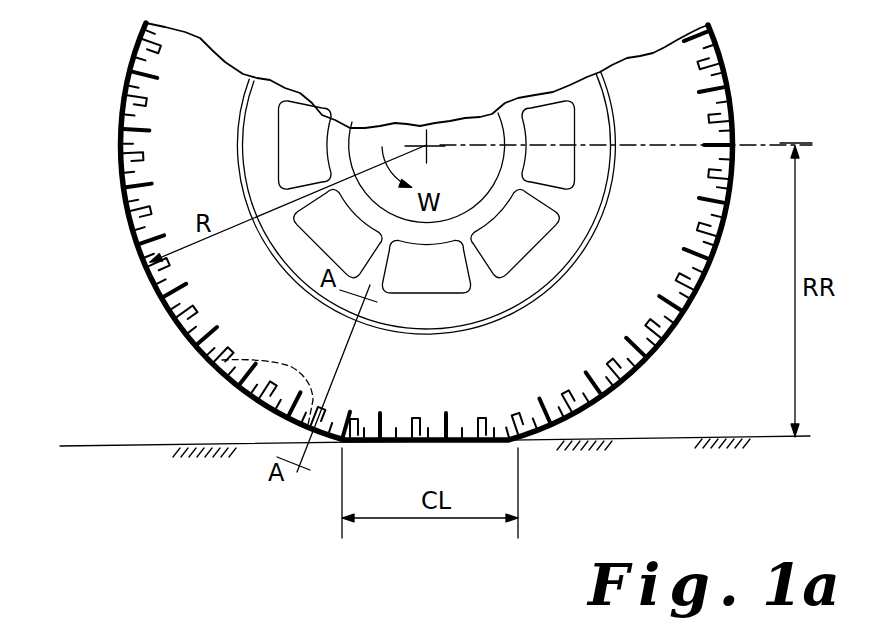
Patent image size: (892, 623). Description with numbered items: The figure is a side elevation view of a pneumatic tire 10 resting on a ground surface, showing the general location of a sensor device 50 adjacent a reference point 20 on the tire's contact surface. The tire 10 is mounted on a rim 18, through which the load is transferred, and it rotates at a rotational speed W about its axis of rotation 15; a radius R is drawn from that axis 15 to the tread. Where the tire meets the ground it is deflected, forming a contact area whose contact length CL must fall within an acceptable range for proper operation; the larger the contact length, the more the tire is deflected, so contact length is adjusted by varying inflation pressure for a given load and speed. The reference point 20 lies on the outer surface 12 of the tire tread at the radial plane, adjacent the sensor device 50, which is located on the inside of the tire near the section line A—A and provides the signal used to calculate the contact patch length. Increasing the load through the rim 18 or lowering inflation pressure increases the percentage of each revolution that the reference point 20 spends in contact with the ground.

The tire 10 is at (741, 62).
The outer surface of the tire tread 12 is at (120, 172).
The axis of rotation 15 is at (426, 145).
The rim 18 is at (245, 117).
The reference point 20 is at (322, 440).
The sensor device 50 is at (203, 358).